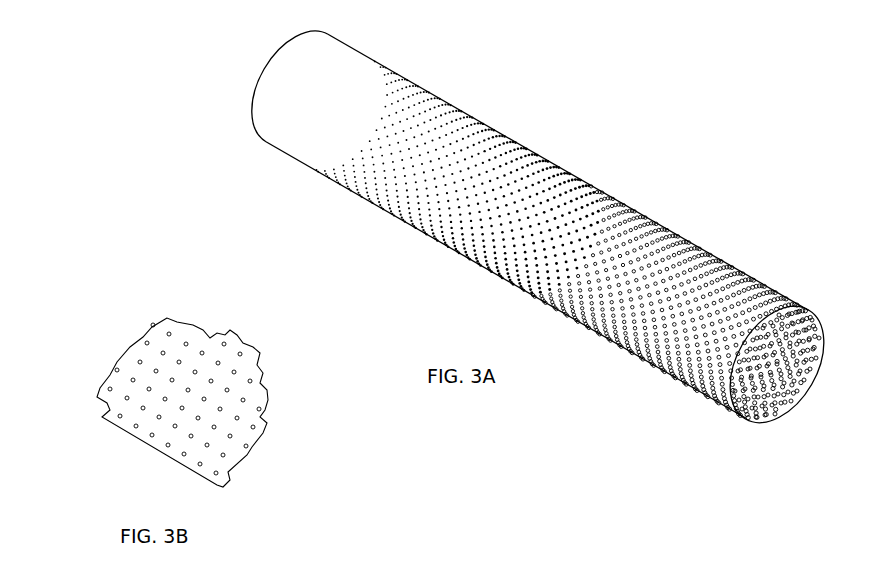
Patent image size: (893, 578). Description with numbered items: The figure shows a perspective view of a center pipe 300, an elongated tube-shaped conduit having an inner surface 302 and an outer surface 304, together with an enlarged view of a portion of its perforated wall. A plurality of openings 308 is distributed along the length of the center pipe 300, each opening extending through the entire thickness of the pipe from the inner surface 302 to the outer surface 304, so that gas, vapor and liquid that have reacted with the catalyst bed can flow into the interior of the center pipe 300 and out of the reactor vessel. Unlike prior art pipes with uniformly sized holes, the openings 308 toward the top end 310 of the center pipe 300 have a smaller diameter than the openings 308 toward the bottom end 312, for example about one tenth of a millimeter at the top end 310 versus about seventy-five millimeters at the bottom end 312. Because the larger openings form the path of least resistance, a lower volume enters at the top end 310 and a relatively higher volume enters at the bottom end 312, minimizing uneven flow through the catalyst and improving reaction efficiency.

In FIG. 3A, the center pipe 300 is at (551, 244).
In FIG. 3A, the inner surface 302 is at (782, 361).
In FIG. 3A, the outer surface 304 is at (299, 124).
In FIG. 3B, the openings 308 is at (188, 392).
In FIG. 3A, the top end 310 is at (533, 225).
In FIG. 3A, the bottom end 312 is at (792, 336).